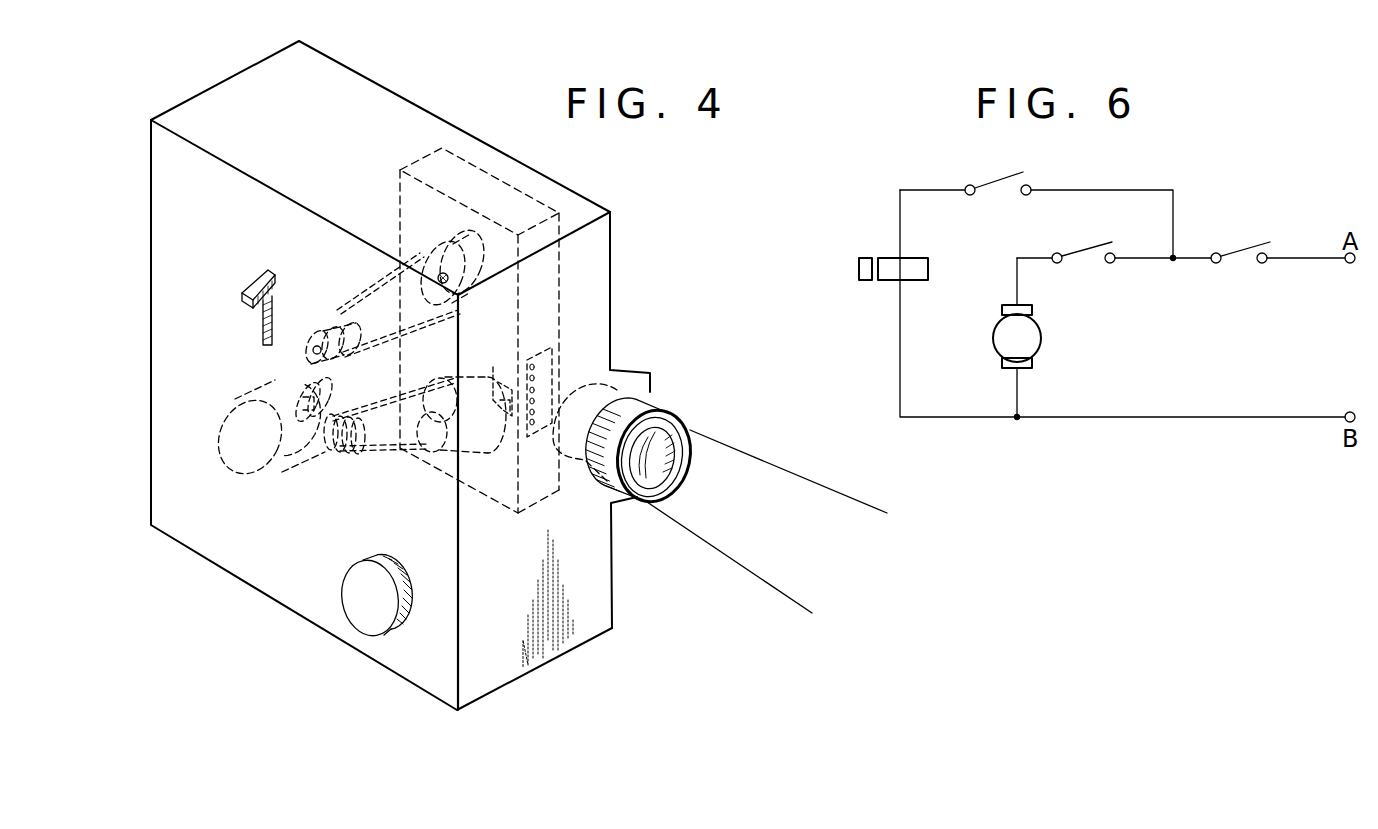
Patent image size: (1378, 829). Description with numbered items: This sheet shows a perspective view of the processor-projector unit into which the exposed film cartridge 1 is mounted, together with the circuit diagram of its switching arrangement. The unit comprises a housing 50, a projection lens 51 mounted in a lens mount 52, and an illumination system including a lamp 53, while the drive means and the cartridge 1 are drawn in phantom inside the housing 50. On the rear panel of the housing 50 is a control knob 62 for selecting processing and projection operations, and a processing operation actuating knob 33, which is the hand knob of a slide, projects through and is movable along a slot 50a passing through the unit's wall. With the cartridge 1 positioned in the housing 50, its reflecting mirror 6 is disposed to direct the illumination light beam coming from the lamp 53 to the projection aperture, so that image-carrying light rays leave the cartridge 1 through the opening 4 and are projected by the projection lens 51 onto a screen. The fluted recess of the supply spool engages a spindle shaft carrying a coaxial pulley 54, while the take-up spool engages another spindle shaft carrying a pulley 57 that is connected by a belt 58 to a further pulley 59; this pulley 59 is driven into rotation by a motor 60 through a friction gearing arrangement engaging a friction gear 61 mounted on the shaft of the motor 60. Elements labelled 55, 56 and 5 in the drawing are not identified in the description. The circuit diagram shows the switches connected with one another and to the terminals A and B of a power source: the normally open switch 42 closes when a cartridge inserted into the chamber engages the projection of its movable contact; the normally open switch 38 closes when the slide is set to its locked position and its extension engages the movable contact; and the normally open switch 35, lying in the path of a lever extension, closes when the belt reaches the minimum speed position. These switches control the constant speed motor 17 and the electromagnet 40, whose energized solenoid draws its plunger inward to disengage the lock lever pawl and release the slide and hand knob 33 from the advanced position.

In FIG. 4, the housing 50 is at (408, 112).
In FIG. 4, the slot 50a is at (263, 314).
In FIG. 4, the processing operation actuating knob 33 is at (250, 282).
In FIG. 4, the cartridge 1 is at (485, 177).
In FIG. 4, the pulley 54 is at (428, 252).
In FIG. 4, the belt 55 is at (387, 270).
In FIG. 4, the pulley 56 is at (317, 330).
In FIG. 4, the friction gear 61 is at (330, 392).
In FIG. 4, the motor 60 is at (263, 467).
In FIG. 4, the pulley 59 is at (332, 443).
In FIG. 4, the belt 58 is at (370, 455).
In FIG. 4, the pulley 57 is at (418, 448).
In FIG. 4, the lamp 53 is at (492, 440).
In FIG. 4, the reflecting mirror 6 is at (497, 378).
In FIG. 4, the apertures 5 is at (537, 360).
In FIG. 4, the opening 4 is at (540, 378).
In FIG. 4, the lens mount 52 is at (657, 403).
In FIG. 4, the projection lens 51 is at (653, 442).
In FIG. 4, the control knob 62 is at (358, 612).
In FIG. 6, the normally open switch 35 is at (990, 178).
In FIG. 6, the normally open switch 38 is at (1080, 240).
In FIG. 6, the normally open switch 42 is at (1240, 240).
In FIG. 6, the electromagnet 40 is at (923, 272).
In FIG. 6, the constant speed motor 17 is at (1041, 338).